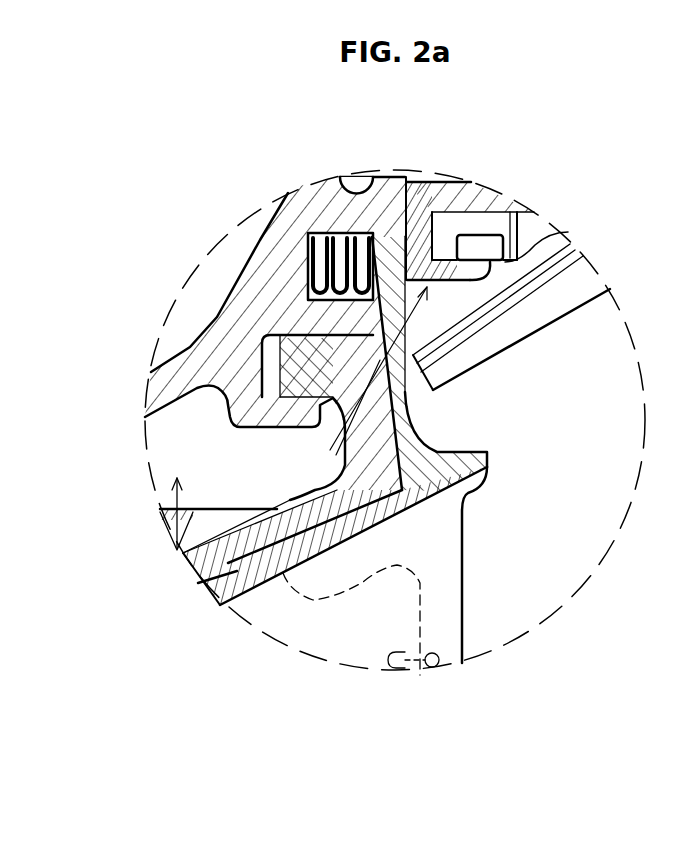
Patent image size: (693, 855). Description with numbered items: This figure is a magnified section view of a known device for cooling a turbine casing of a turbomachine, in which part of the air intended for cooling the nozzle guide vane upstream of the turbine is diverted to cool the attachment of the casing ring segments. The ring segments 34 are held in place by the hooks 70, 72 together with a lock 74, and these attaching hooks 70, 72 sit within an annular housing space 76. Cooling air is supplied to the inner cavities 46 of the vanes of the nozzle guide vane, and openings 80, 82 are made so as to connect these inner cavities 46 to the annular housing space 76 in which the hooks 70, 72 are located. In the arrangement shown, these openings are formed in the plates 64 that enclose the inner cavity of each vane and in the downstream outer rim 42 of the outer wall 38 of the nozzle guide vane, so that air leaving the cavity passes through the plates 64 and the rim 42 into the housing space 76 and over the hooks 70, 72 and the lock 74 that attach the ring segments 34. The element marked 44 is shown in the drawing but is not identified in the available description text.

The ring segments 34 is at (568, 314).
The outer wall 38 is at (488, 459).
The downstream outer rim 42 is at (405, 423).
The seal housing body 44 is at (285, 400).
The inner cavities 46 is at (418, 602).
The plates 64 is at (160, 515).
The hook 70 is at (510, 212).
The hook 72 is at (478, 227).
The lock 74 is at (443, 190).
The annular housing space 76 is at (452, 288).
The opening 80 is at (173, 535).
The opening 82 is at (335, 571).